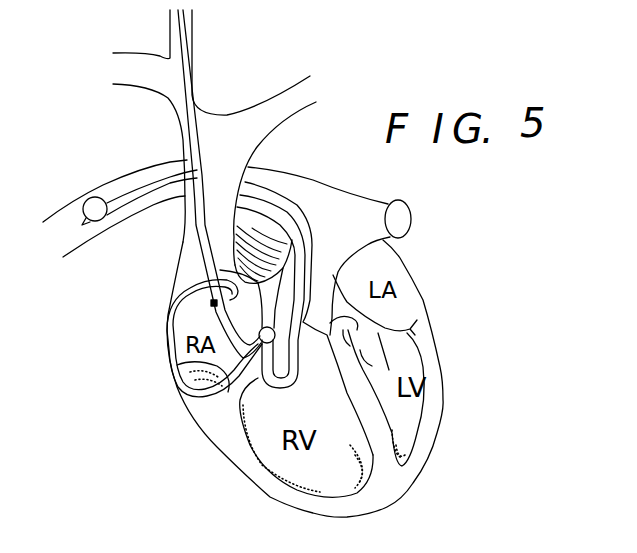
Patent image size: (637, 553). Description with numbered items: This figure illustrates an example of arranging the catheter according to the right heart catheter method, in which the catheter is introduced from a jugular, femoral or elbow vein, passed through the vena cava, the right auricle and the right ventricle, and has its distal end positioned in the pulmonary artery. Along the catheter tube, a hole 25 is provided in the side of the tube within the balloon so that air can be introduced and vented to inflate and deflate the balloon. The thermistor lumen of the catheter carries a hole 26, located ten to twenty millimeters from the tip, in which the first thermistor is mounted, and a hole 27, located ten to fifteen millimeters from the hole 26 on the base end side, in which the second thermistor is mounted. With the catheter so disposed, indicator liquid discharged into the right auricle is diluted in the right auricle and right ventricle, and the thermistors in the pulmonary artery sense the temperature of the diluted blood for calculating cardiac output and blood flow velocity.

The hole 25 is at (195, 237).
The hole 26 is at (211, 305).
The hole 27 is at (152, 178).